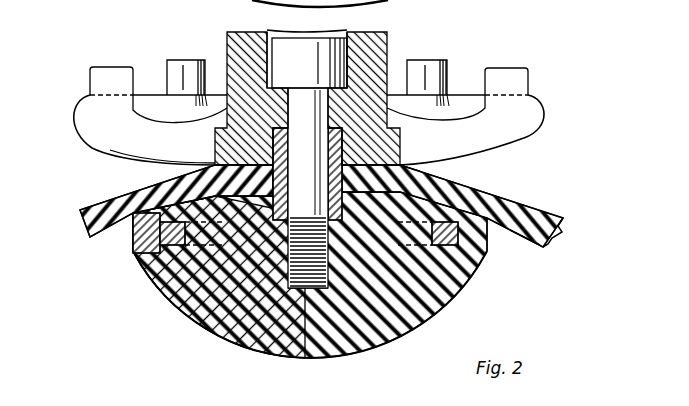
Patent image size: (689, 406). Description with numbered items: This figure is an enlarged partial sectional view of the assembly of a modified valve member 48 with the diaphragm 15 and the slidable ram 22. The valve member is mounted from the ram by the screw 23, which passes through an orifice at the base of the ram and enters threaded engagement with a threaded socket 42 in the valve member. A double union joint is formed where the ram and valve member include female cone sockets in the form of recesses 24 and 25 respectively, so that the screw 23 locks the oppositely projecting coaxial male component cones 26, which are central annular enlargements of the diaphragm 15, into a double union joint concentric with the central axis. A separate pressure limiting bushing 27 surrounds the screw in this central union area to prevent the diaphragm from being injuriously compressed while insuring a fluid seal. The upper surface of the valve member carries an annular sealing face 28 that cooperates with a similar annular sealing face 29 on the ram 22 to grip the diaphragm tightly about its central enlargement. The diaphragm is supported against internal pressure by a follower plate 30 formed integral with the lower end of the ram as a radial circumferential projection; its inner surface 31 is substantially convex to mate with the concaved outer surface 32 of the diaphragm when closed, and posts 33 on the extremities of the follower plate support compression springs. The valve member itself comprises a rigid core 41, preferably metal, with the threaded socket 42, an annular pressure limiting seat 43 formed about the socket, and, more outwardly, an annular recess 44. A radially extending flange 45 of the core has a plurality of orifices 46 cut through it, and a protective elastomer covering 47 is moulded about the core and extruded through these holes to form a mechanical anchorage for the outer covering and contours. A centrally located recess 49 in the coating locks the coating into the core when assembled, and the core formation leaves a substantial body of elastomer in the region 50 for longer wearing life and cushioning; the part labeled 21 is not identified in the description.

The diaphragm 15 is at (563, 222).
The disk 21 is at (525, 241).
The slidable ram 22 is at (383, 29).
The screw 23 is at (330, 62).
The recess 24 is at (245, 132).
The recess 25 is at (132, 238).
The male component cones 26 is at (400, 148).
The pressure limiting bushing 27 is at (365, 140).
The annular sealing face 28 is at (433, 170).
The annular sealing face 29 is at (217, 149).
The follower plate 30 is at (528, 108).
The inner surface of follower plate 31 is at (82, 140).
The concaved outer surface of diaphragm 32 is at (523, 201).
The posts 33 is at (168, 65).
The rigid core 41 is at (204, 328).
The threaded socket 42 is at (247, 340).
The annular pressure limiting seat 43 is at (198, 310).
The annular recess 44 is at (162, 285).
The radially extending flange 45 is at (132, 252).
The orifices 46 is at (146, 268).
The protective elastomer covering 47 is at (378, 340).
The valve member 48 is at (484, 264).
The centrally located recess 49 is at (342, 208).
The region of thick elastomer covering 50 is at (433, 328).